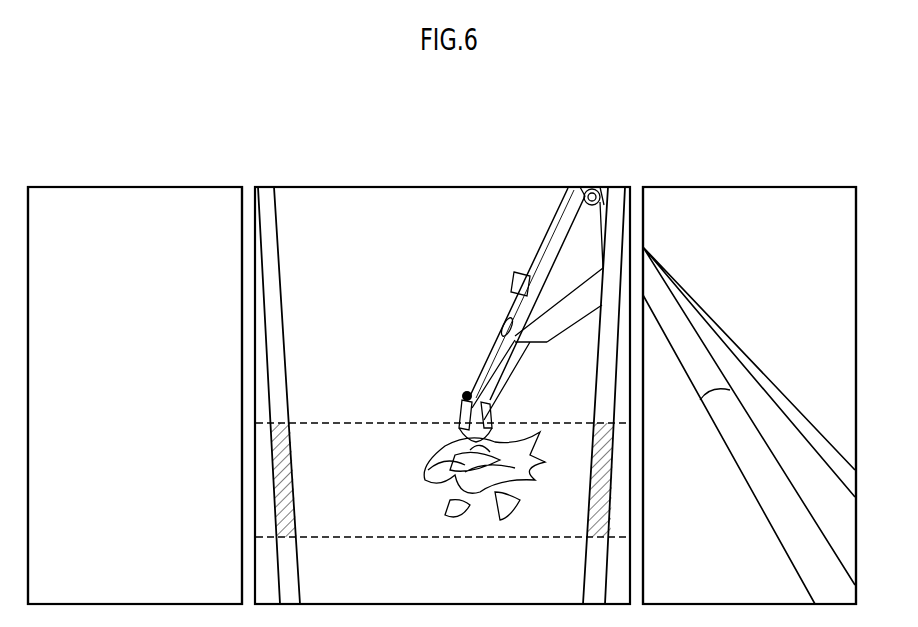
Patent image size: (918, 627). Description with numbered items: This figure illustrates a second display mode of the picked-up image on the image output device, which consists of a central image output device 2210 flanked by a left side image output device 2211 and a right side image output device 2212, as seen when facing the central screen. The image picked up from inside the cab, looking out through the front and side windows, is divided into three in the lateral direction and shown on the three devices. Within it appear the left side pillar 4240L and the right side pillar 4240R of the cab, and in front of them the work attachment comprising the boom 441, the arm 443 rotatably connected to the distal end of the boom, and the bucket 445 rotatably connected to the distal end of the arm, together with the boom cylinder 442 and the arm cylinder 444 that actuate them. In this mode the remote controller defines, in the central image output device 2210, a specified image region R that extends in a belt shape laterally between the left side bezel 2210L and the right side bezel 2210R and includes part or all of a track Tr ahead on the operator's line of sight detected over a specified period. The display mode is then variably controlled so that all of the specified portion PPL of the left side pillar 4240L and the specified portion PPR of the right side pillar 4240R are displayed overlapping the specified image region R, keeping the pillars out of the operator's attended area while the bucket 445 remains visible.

The left side image output device 2211 is at (188, 168).
The central image output device 2210 is at (472, 168).
The right side image output device 2212 is at (698, 168).
The left side bezel 2210L is at (241, 495).
The right side bezel 2210R is at (645, 560).
The left side pillar 4240L is at (302, 565).
The right side pillar 4240R is at (583, 565).
The specified portion of the left side pillar PPL is at (290, 503).
The specified portion of the right side pillar PPR is at (590, 503).
The specified image region R is at (340, 416).
The arm cylinder 444 is at (526, 246).
The arm 443 is at (480, 342).
The boom 441 is at (568, 322).
The bucket 445 is at (455, 418).
The boom cylinder 442 is at (690, 398).
The track Tr is at (475, 522).